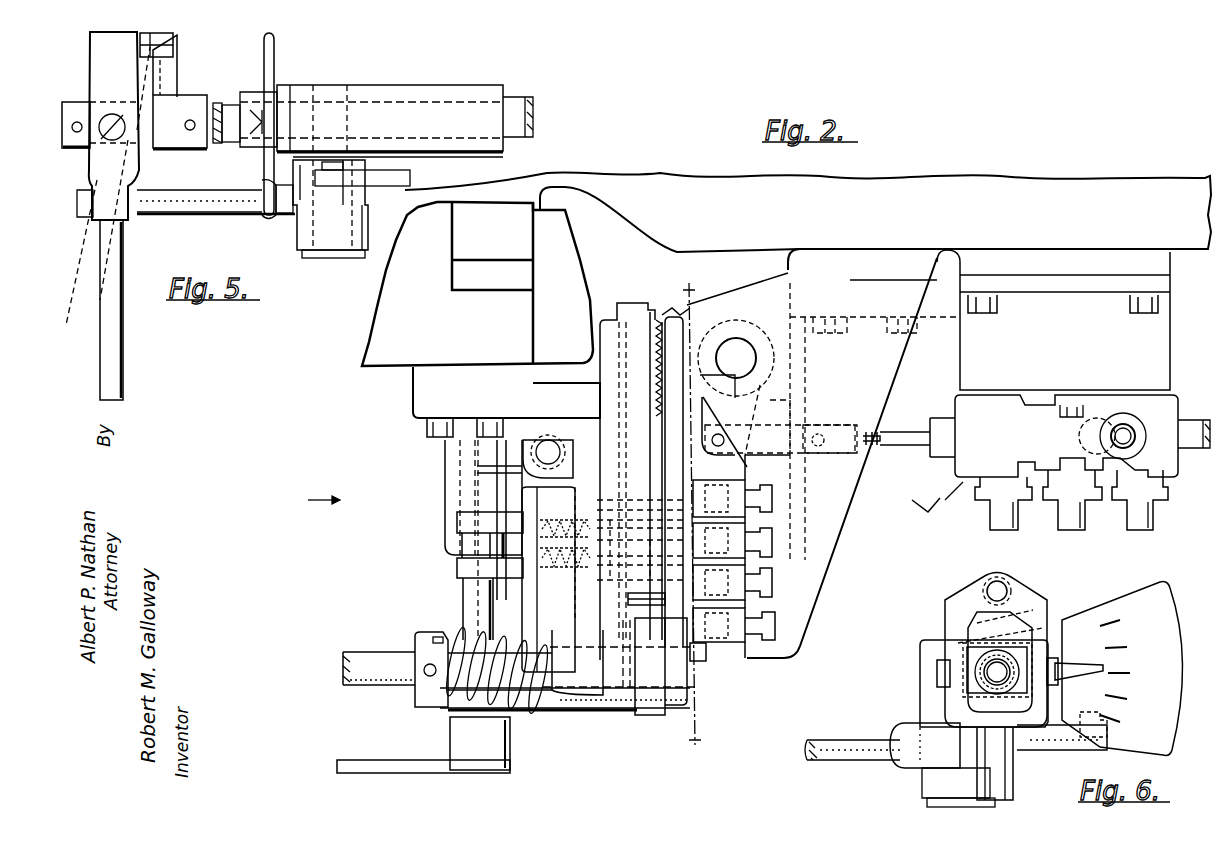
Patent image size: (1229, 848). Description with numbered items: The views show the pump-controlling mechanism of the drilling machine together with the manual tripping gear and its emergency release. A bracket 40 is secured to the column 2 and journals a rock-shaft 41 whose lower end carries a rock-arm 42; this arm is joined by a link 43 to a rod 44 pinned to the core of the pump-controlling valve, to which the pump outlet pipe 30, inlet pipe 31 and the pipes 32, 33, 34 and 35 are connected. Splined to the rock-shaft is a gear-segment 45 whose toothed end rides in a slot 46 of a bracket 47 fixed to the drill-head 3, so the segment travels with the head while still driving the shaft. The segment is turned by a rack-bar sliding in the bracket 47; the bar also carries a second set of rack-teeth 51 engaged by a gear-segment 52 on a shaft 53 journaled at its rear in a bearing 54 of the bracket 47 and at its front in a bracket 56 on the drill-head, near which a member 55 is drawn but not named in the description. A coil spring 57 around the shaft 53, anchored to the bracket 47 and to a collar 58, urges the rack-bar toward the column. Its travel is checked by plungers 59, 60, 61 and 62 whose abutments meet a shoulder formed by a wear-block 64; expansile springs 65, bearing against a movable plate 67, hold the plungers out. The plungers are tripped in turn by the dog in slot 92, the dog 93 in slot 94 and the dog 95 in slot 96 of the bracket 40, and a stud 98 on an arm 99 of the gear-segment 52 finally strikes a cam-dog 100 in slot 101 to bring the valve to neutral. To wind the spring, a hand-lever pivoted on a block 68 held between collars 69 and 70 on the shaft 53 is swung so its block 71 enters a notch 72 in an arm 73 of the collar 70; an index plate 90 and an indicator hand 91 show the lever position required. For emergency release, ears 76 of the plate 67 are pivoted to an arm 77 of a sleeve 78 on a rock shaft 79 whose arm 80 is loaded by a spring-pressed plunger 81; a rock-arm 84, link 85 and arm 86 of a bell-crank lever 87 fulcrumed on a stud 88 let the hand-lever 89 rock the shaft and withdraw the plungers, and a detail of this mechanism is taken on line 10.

In FIG. 2, the column 2 is at (808, 221).
In FIG. 2, the drill-head 3 is at (477, 284).
In FIG. 2, the section line 10 is at (694, 515).
In FIG. 2, the outlet pipe 30 is at (1065, 522).
In FIG. 2, the inlet pipe 31 is at (1196, 420).
In FIG. 2, the pipe 32 is at (1133, 520).
In FIG. 2, the pipe 33 is at (1128, 428).
In FIG. 2, the pipe 34 is at (1080, 436).
In FIG. 2, the pipe 35 is at (993, 517).
In FIG. 2, the bracket 40 is at (905, 363).
In FIG. 2, the rock-shaft 41 is at (736, 358).
In FIG. 2, the rock-arm 42 is at (712, 425).
In FIG. 2, the link 43 is at (780, 420).
In FIG. 2, the rod 44 is at (910, 447).
In FIG. 2, the gear-segment 45 is at (718, 320).
In FIG. 2, the slot 46 is at (672, 437).
In FIG. 2, the bracket 47 is at (506, 402).
In FIG. 2, the second set of rack-teeth 51 is at (655, 604).
In FIG. 2, the gear-segment 52 is at (652, 716).
In FIG. 5, the shaft 53 is at (526, 97).
In FIG. 2, the bearing 54 is at (607, 708).
In FIG. 5, the cylinder 55 is at (396, 85).
In FIG. 5, the bracket 56 is at (490, 162).
In FIG. 2, the coil spring 57 is at (531, 708).
In FIG. 2, the collar 58 is at (418, 707).
In FIG. 2, the plunger 59 is at (663, 598).
In FIG. 2, the plunger 60 is at (672, 556).
In FIG. 2, the plunger 61 is at (672, 523).
In FIG. 2, the plunger 62 is at (670, 508).
In FIG. 2, the wear-block 64 is at (625, 566).
In FIG. 2, the expansile springs 65 is at (580, 520).
In FIG. 2, the movable plate 67 is at (535, 595).
In FIG. 5, the block 68 is at (136, 150).
In FIG. 5, the collar 69 is at (74, 102).
In FIG. 5, the collar 70 is at (182, 98).
In FIG. 5, the block 71 is at (160, 42).
In FIG. 5, the notch 72 is at (172, 54).
In FIG. 5, the arm 73 is at (177, 76).
In FIG. 2, the spaced ears 76 is at (490, 545).
In FIG. 2, the arm 77 is at (482, 545).
In FIG. 2, the sleeve 78 is at (445, 481).
In FIG. 2, the rock shaft 79 is at (463, 603).
In FIG. 2, the arm 80 is at (499, 520).
In FIG. 2, the spring-pressed plunger 81 is at (555, 458).
In FIG. 2, the rock-arm 84 is at (450, 741).
In FIG. 5, the link 85 is at (410, 178).
In FIG. 5, the arm 86 is at (340, 205).
In FIG. 5, the bell-crank lever 87 is at (290, 220).
In FIG. 5, the stud 88 is at (340, 259).
In FIG. 5, the hand-lever 89 is at (222, 212).
In FIG. 5, the index plate 90 is at (274, 50).
In FIG. 5, the indicator hand 91 is at (253, 130).
In FIG. 2, the indicator hand 91 is at (719, 582).
In FIG. 2, the slot 92 is at (768, 586).
In FIG. 2, the dog 93 is at (719, 540).
In FIG. 2, the slot 94 is at (768, 543).
In FIG. 2, the dog 95 is at (719, 498).
In FIG. 2, the slot 96 is at (768, 498).
In FIG. 2, the stud 98 is at (700, 660).
In FIG. 2, the arm 99 is at (687, 696).
In FIG. 2, the cam-dog 100 is at (725, 616).
In FIG. 2, the slot 101 is at (775, 626).